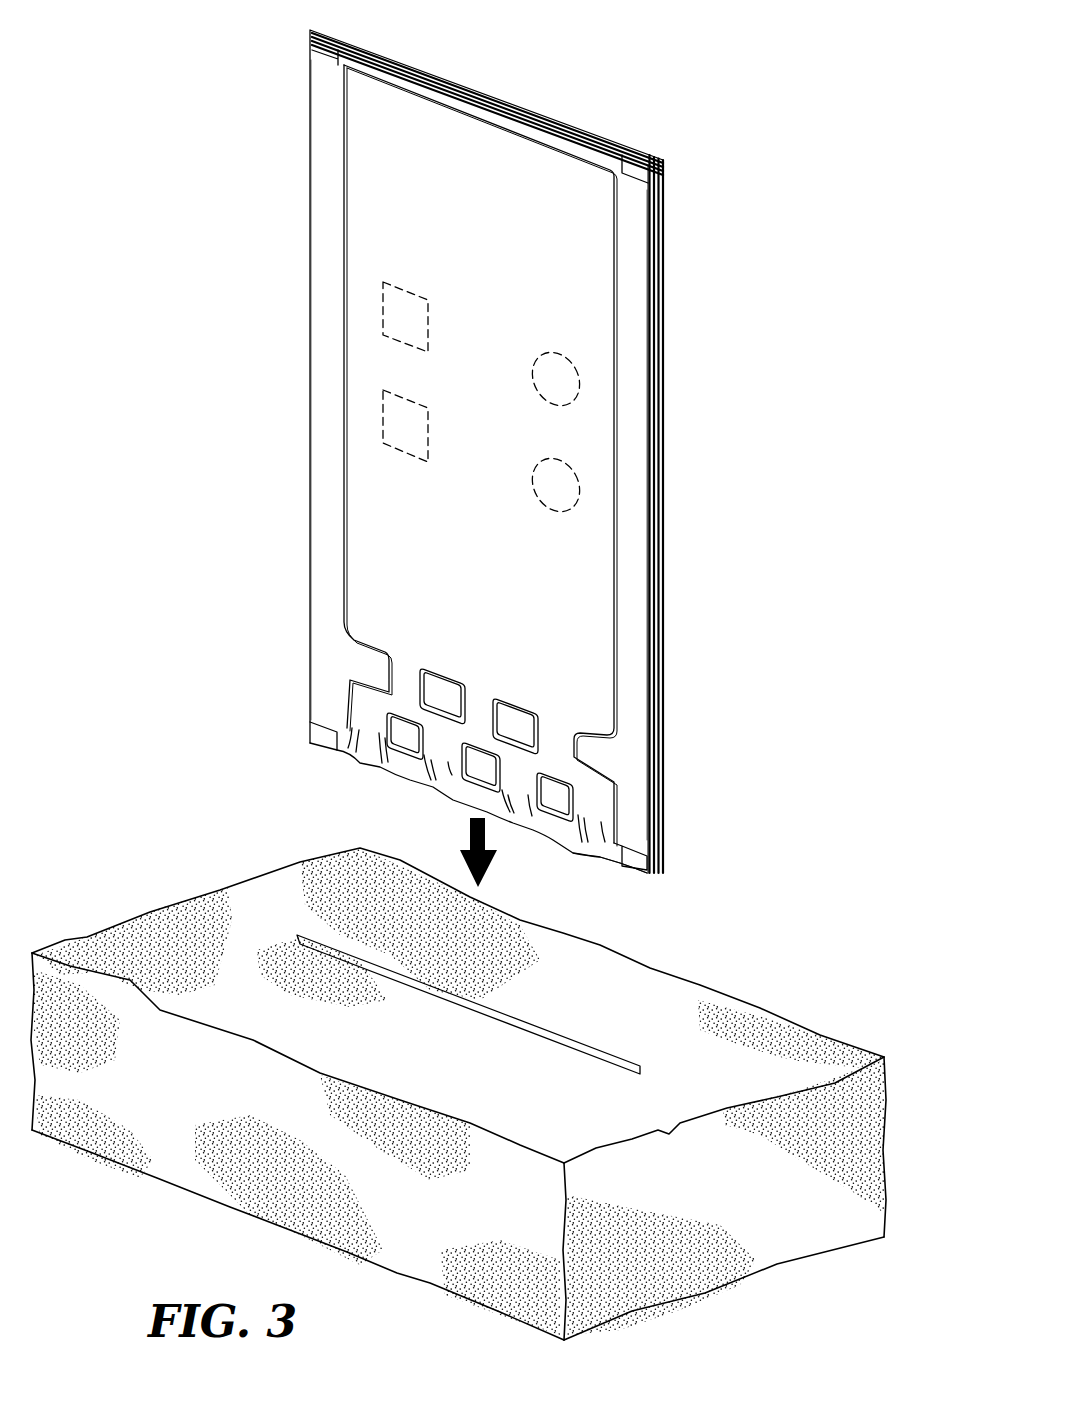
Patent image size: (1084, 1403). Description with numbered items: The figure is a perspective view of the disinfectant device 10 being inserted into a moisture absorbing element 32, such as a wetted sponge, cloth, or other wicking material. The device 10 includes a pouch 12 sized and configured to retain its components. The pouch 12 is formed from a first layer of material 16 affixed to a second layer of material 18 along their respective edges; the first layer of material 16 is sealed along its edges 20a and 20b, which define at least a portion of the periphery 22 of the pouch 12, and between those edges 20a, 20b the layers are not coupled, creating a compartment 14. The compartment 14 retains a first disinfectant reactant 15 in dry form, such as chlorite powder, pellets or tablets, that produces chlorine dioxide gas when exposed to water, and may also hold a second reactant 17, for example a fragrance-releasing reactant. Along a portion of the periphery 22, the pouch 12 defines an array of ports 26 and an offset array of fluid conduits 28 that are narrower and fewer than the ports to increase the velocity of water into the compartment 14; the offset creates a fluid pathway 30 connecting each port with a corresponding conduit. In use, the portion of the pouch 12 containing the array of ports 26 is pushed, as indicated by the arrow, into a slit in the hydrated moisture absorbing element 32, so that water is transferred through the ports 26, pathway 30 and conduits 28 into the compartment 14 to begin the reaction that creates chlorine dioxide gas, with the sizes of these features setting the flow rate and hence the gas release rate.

The disinfectant device 10 is at (277, 376).
The pouch 12 is at (311, 31).
The compartment 14 is at (562, 198).
The first disinfectant reactant 15 is at (395, 310).
The first layer of material 16 is at (652, 273).
The second reactant 17 is at (560, 375).
The second layer of material 18 is at (665, 324).
The edge 20a is at (632, 507).
The edge 20b is at (330, 166).
The periphery 22 is at (511, 123).
The array of ports 26 is at (588, 857).
The array of fluid conduits 28 is at (553, 738).
The fluid pathway 30 is at (522, 763).
The moisture absorbing element 32 is at (757, 1008).